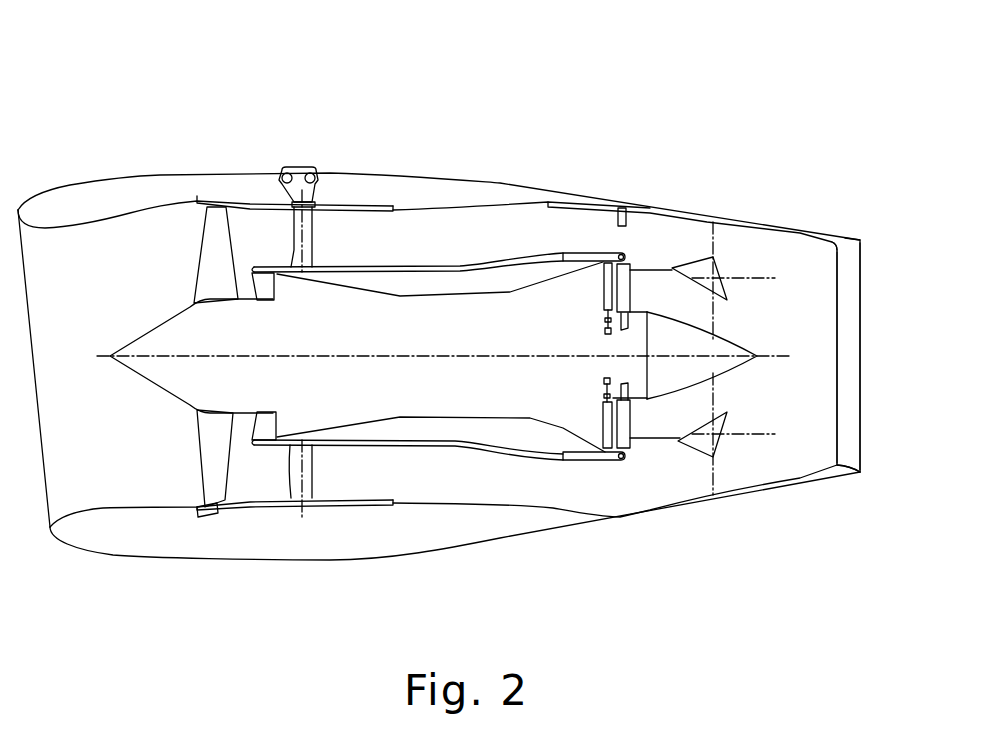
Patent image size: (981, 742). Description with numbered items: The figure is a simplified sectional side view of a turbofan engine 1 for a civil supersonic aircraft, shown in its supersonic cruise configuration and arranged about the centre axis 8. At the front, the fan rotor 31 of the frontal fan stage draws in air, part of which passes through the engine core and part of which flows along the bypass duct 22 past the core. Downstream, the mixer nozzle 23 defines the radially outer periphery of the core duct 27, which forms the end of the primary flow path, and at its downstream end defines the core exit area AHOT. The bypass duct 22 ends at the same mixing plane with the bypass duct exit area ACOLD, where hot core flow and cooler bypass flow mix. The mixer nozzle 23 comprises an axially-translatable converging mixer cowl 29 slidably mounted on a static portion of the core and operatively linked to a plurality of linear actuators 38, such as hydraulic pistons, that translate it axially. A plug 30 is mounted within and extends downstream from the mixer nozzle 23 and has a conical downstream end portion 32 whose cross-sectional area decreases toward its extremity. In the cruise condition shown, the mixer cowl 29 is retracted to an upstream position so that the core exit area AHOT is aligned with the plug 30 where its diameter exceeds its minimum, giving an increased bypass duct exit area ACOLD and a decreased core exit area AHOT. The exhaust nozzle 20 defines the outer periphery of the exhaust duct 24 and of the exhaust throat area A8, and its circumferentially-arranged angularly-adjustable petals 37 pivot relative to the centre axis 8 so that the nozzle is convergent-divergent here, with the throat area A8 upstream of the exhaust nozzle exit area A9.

The turbofan engine 1 is at (203, 97).
The centre axis 8 is at (178, 350).
The exhaust nozzle 20 is at (866, 473).
The bypass duct 22 is at (668, 247).
The mixer nozzle 23 is at (680, 248).
The exhaust duct 24 is at (817, 451).
The core duct 27 is at (650, 290).
The mixer cowl 29 is at (697, 272).
The plug 30 is at (712, 422).
The fan rotor 31 is at (227, 264).
The conical downstream end portion 32 is at (733, 345).
The petal 37 is at (830, 235).
The linear actuator 38 is at (588, 462).
The exhaust nozzle exit area A9 is at (864, 285).
The exhaust throat area A8 is at (840, 407).
The bypass duct exit area ACOLD is at (715, 258).
The core exit area AHOT is at (714, 392).